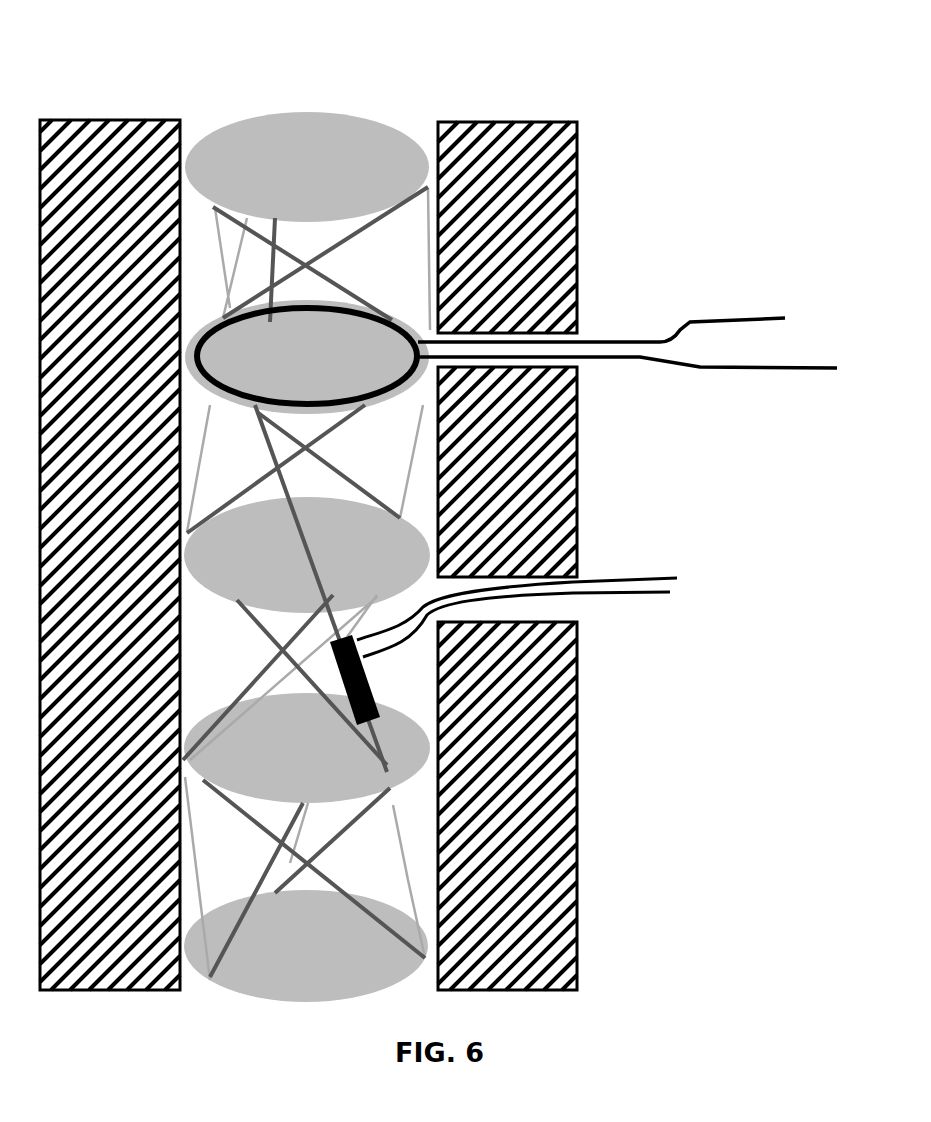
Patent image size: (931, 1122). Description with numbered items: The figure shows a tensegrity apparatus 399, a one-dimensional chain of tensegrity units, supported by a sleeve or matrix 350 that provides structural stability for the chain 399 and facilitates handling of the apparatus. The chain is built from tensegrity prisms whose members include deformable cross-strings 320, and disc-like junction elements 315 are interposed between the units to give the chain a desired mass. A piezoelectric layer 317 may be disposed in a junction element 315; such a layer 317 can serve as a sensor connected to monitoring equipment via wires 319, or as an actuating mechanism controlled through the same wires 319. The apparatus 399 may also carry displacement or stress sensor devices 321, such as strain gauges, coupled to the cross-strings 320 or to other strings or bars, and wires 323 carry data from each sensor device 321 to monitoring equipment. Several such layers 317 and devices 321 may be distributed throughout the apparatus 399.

The sleeve 350 is at (308, 520).
The tensegrity apparatus 399 is at (510, 508).
The junction element 315 is at (205, 333).
The piezoelectric layer 317 is at (400, 320).
The wire 319 is at (665, 375).
The cross-string 320 is at (387, 768).
The sensor device 321 is at (367, 667).
The wire 323 is at (633, 600).